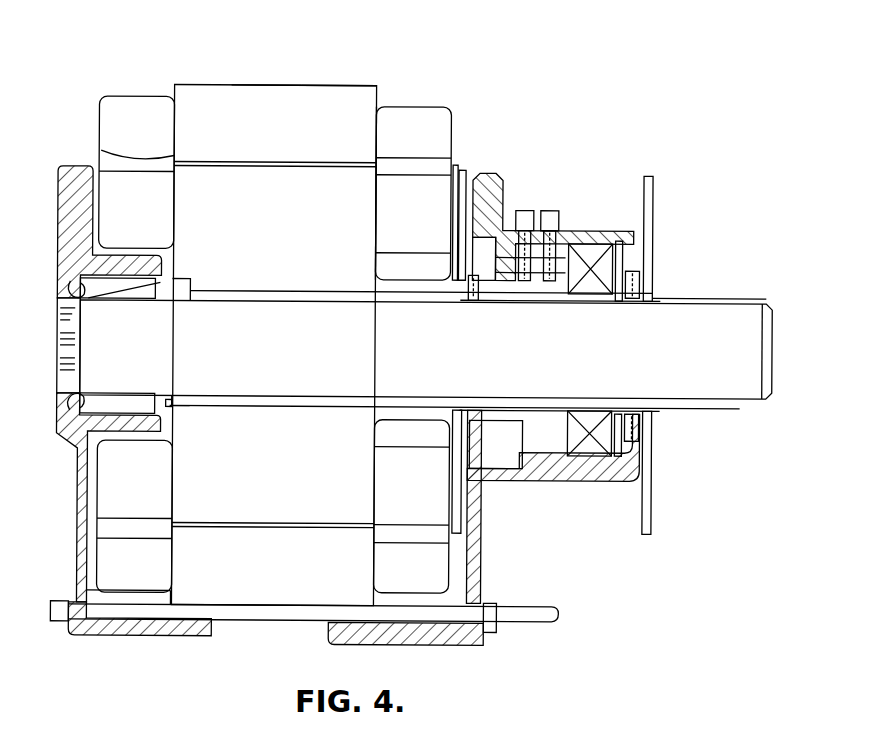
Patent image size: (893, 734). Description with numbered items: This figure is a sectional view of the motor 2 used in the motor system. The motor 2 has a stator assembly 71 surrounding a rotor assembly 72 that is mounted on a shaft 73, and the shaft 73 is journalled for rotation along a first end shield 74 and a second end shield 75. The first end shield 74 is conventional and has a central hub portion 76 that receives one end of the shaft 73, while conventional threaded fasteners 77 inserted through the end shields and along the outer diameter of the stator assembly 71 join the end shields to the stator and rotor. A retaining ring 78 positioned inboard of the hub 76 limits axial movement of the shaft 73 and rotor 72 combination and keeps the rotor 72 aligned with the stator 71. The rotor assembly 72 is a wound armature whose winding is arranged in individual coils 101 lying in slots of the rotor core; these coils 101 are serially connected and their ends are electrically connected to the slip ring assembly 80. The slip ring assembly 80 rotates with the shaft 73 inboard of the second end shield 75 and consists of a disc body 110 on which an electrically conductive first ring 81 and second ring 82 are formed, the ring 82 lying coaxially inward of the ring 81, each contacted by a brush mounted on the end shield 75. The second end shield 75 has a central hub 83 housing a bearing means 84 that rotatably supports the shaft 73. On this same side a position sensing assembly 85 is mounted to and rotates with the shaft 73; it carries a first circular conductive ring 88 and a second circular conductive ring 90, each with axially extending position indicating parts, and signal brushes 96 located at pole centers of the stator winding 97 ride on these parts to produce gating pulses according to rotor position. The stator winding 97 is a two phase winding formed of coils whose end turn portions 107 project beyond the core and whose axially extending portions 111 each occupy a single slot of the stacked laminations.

The motor 2 is at (560, 234).
The stator assembly 71 is at (290, 98).
The rotor assembly 72 is at (273, 344).
The shaft 73 is at (415, 343).
The first end shield 74 is at (83, 503).
The second end shield 75 is at (473, 569).
The central hub portion 76 is at (80, 259).
The threaded fasteners 77 is at (62, 603).
The retaining ring 78 is at (72, 306).
The slip ring assembly 80 is at (455, 176).
The first ring 81 is at (465, 200).
The second ring 82 is at (476, 196).
The central hub 83 is at (565, 476).
The bearing means 84 is at (598, 442).
The position sensing assembly 85 is at (594, 464).
The first circular electrically conductive ring 88 is at (523, 282).
The second circular electrically conductive ring 90 is at (534, 282).
The signal brushes 96 is at (520, 210).
The stator winding 97 is at (383, 130).
The coils 101 is at (345, 96).
The end turn portions 107 is at (438, 115).
The disc body 110 is at (458, 504).
The axially extending portions 111 is at (101, 155).